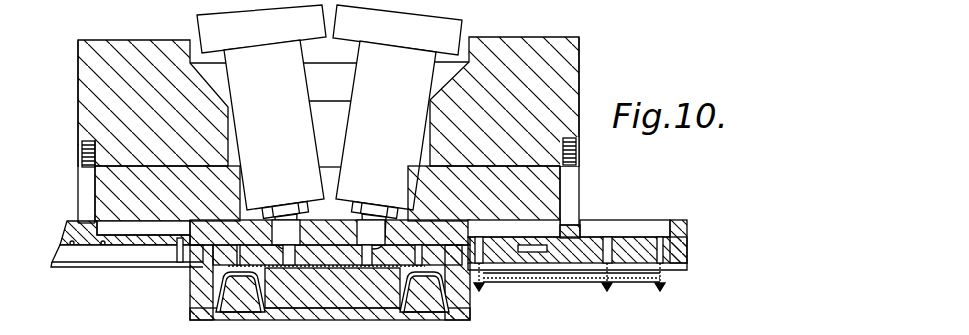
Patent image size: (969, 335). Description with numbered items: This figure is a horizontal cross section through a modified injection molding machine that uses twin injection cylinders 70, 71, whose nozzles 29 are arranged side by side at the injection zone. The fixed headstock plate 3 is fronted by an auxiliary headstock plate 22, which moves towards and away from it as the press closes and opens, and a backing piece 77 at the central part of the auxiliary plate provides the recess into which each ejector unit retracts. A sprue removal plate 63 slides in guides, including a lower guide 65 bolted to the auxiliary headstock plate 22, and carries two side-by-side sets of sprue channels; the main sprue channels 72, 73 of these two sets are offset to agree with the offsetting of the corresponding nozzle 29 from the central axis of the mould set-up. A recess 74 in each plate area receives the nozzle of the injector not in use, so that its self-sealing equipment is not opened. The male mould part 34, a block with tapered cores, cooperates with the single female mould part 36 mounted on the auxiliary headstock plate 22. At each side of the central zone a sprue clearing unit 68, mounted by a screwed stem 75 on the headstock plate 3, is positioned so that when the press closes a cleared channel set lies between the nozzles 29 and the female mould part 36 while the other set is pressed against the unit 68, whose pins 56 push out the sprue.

The headstock plate 3 is at (564, 78).
The auxiliary headstock plate 22 is at (100, 176).
The injection nozzle 29 is at (286, 217).
The male mould part 34 is at (468, 311).
The female mould part 36 is at (197, 295).
The pins 56 is at (173, 262).
The sprue removal plate 63 is at (682, 270).
The lower guide 65 is at (100, 276).
The sprue clearing unit 68 is at (601, 238).
The injection cylinder 70 is at (207, 22).
The injection cylinder 71 is at (438, 28).
The main sprue channel 72 is at (356, 214).
The main sprue channel 73 is at (628, 248).
The recess 74 is at (372, 254).
The screwed stem 75 is at (80, 187).
The backing piece 77 is at (442, 216).